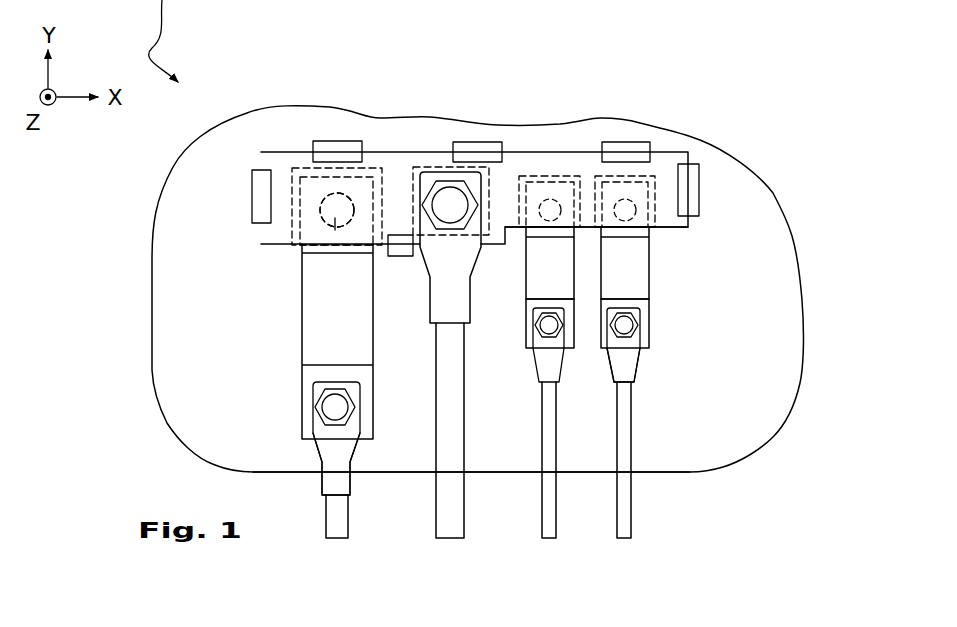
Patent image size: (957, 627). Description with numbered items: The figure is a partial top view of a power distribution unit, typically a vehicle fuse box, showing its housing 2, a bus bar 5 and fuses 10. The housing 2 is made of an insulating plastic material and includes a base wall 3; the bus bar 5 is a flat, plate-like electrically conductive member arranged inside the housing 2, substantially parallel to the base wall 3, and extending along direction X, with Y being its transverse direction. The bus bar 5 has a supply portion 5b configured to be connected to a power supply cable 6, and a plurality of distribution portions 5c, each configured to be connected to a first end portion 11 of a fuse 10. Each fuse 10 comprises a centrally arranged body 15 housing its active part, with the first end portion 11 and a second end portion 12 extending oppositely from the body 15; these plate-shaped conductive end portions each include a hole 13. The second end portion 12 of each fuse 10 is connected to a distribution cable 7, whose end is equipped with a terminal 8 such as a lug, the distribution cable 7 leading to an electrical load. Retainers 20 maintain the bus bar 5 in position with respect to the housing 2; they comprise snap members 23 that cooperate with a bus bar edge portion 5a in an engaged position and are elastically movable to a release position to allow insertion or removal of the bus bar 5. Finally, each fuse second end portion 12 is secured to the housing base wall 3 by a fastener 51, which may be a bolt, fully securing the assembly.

The housing 2 is at (806, 303).
The base wall 3 is at (743, 433).
The bus bar 5 is at (666, 178).
The bus bar edge portion 5a is at (293, 160).
The supply portion 5b is at (421, 172).
The distribution portions 5c is at (377, 168).
The power supply cable 6 is at (452, 528).
The distribution cable 7 is at (333, 528).
The terminal 8 is at (627, 370).
The fuse 10 is at (296, 338).
The first end portion 11 is at (642, 232).
The second end portion 12 is at (307, 426).
The hole 13 is at (337, 228).
The body 15 is at (630, 285).
The retainers 20 is at (342, 150).
The snap member 23 is at (620, 150).
The fastener 51 is at (331, 431).